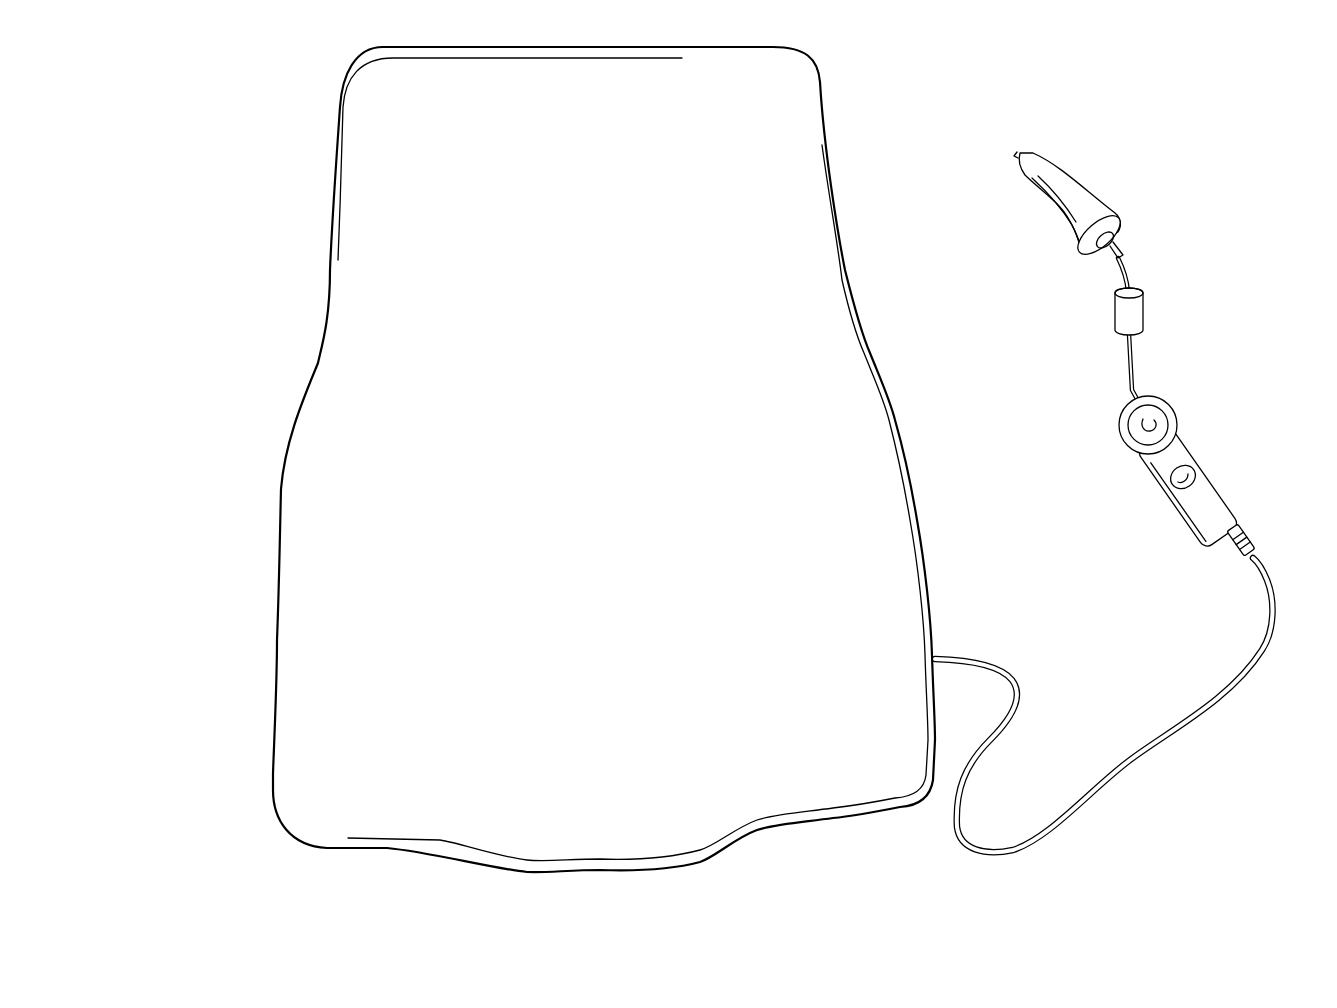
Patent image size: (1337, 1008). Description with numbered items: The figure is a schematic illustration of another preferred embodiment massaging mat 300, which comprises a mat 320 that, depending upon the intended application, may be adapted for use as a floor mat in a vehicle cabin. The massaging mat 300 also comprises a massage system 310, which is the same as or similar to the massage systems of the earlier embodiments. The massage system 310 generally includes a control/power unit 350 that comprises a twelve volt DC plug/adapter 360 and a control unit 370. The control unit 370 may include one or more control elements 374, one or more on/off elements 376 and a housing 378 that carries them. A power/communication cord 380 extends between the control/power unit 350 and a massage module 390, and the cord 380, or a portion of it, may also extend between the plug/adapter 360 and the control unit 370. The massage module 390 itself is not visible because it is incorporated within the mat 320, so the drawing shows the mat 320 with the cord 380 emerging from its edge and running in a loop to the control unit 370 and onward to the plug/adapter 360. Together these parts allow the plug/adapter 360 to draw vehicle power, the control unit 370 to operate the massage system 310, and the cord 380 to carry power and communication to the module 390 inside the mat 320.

The massaging mat 300 is at (258, 129).
The massage system 310 is at (1098, 517).
The mat 320 is at (793, 147).
The massage module 390 is at (918, 418).
The control/power unit 350 is at (1107, 145).
The 12 VDC plug/adapter 360 is at (1065, 219).
The control unit 370 is at (1192, 532).
The control element 374 is at (1180, 478).
The on/off element 376 is at (1183, 477).
The housing 378 is at (1138, 457).
The power/communication cord 380 is at (1118, 273).